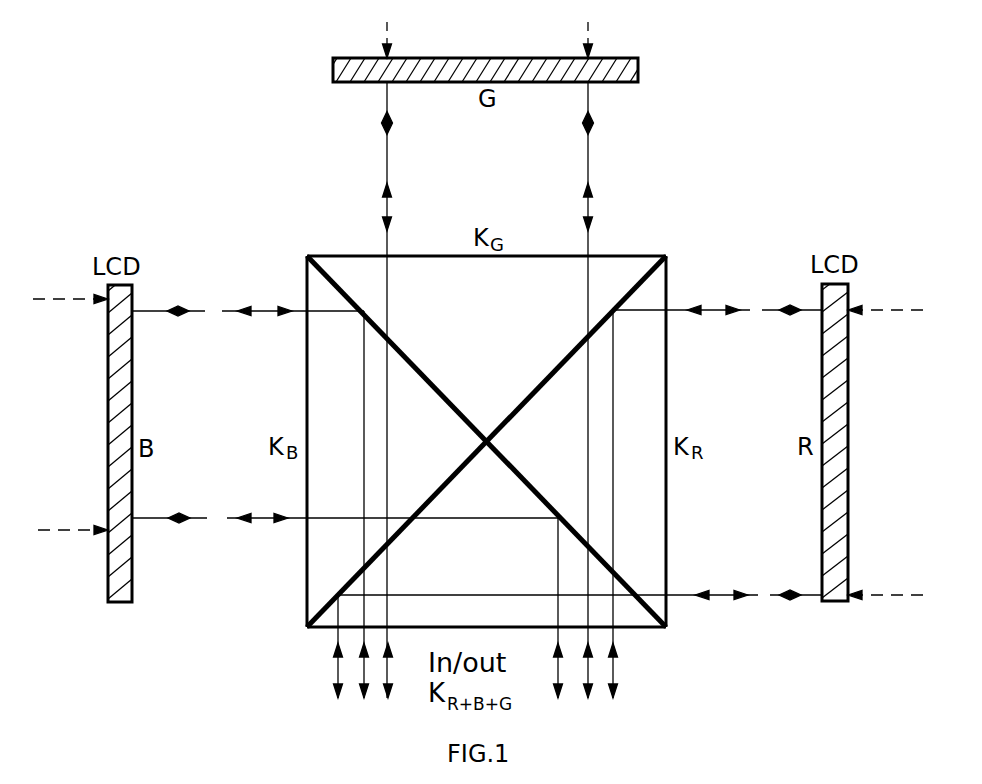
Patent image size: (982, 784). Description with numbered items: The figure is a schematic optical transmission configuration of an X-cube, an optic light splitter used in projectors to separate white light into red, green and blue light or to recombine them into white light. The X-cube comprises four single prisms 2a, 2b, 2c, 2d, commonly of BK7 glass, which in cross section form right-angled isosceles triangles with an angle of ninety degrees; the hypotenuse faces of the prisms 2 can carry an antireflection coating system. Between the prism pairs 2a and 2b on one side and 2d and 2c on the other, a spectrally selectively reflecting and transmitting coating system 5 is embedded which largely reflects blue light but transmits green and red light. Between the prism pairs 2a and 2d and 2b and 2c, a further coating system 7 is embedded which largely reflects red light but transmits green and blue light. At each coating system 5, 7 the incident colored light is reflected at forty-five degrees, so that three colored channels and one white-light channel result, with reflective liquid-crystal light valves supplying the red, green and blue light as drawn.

The prisms 2 is at (487, 409).
The single prism 2a is at (486, 322).
The single prism 2b is at (605, 441).
The single prism 2c is at (486, 559).
The single prism 2d is at (375, 441).
The spectrally selectively reflecting and transmitting coating system 5 is at (335, 288).
The further spectrally selectively reflecting and transmitting coating system 7 is at (633, 288).